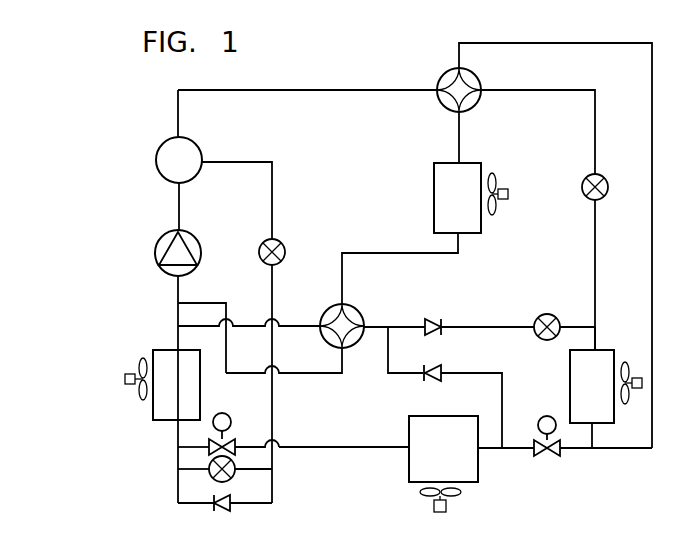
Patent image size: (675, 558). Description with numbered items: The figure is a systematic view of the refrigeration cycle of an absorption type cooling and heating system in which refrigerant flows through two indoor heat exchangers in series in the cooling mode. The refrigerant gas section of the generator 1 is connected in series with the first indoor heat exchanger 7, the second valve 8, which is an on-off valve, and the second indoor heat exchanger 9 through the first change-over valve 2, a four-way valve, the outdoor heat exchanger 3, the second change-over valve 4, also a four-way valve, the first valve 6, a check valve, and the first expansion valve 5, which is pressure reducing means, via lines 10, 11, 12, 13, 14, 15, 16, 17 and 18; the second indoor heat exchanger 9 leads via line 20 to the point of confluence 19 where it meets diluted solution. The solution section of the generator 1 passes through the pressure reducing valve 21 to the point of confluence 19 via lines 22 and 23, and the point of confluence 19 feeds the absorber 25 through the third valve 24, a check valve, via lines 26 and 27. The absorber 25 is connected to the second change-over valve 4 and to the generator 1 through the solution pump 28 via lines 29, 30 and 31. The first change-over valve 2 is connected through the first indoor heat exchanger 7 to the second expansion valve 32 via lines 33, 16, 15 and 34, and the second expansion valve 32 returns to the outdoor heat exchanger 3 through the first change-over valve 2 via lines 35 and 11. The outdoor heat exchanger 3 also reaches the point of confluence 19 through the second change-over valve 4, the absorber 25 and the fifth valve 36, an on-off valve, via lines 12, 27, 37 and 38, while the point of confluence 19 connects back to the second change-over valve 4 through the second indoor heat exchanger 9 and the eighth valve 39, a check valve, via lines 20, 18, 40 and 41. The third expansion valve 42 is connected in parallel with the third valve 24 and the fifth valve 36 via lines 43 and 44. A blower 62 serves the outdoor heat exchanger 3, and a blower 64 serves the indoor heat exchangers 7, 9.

The generator 1 is at (163, 146).
The first change-over valve 2 is at (446, 70).
The outdoor heat exchanger 3 is at (433, 168).
The second change-over valve 4 is at (327, 310).
The first expansion valve 5 is at (536, 316).
The first valve 6 is at (440, 320).
The first indoor heat exchanger 7 is at (570, 380).
The second valve 8 is at (546, 458).
The second indoor heat exchanger 9 is at (408, 418).
The line 10 is at (274, 90).
The line 11 is at (459, 138).
The line 12 is at (420, 252).
The line 13 is at (412, 324).
The line 14 is at (580, 326).
The line 15 is at (595, 342).
The line 16 is at (597, 432).
The line 17 is at (582, 450).
The line 18 is at (492, 450).
The point of confluence 19 is at (274, 444).
The line 20 is at (337, 450).
The pressure reducing valve 21 is at (263, 246).
The line 22 is at (240, 162).
The line 23 is at (272, 304).
The third valve 24 is at (218, 512).
The absorber 25 is at (158, 350).
The line 26 is at (273, 500).
The line 27 is at (177, 494).
The solution pump 28 is at (158, 246).
The line 29 is at (176, 324).
The line 30 is at (303, 373).
The line 31 is at (180, 213).
The second expansion valve 32 is at (586, 178).
The line 33 is at (556, 43).
The line 34 is at (608, 246).
The line 35 is at (555, 90).
The fifth valve 36 is at (222, 400).
The line 37 is at (180, 446).
The line 38 is at (254, 436).
The eighth valve 39 is at (437, 366).
The line 40 is at (502, 402).
The line 41 is at (398, 356).
The third expansion valve 42 is at (236, 462).
The line 43 is at (258, 472).
The line 44 is at (203, 470).
The blower 62 is at (495, 180).
The blower 64 is at (628, 364).